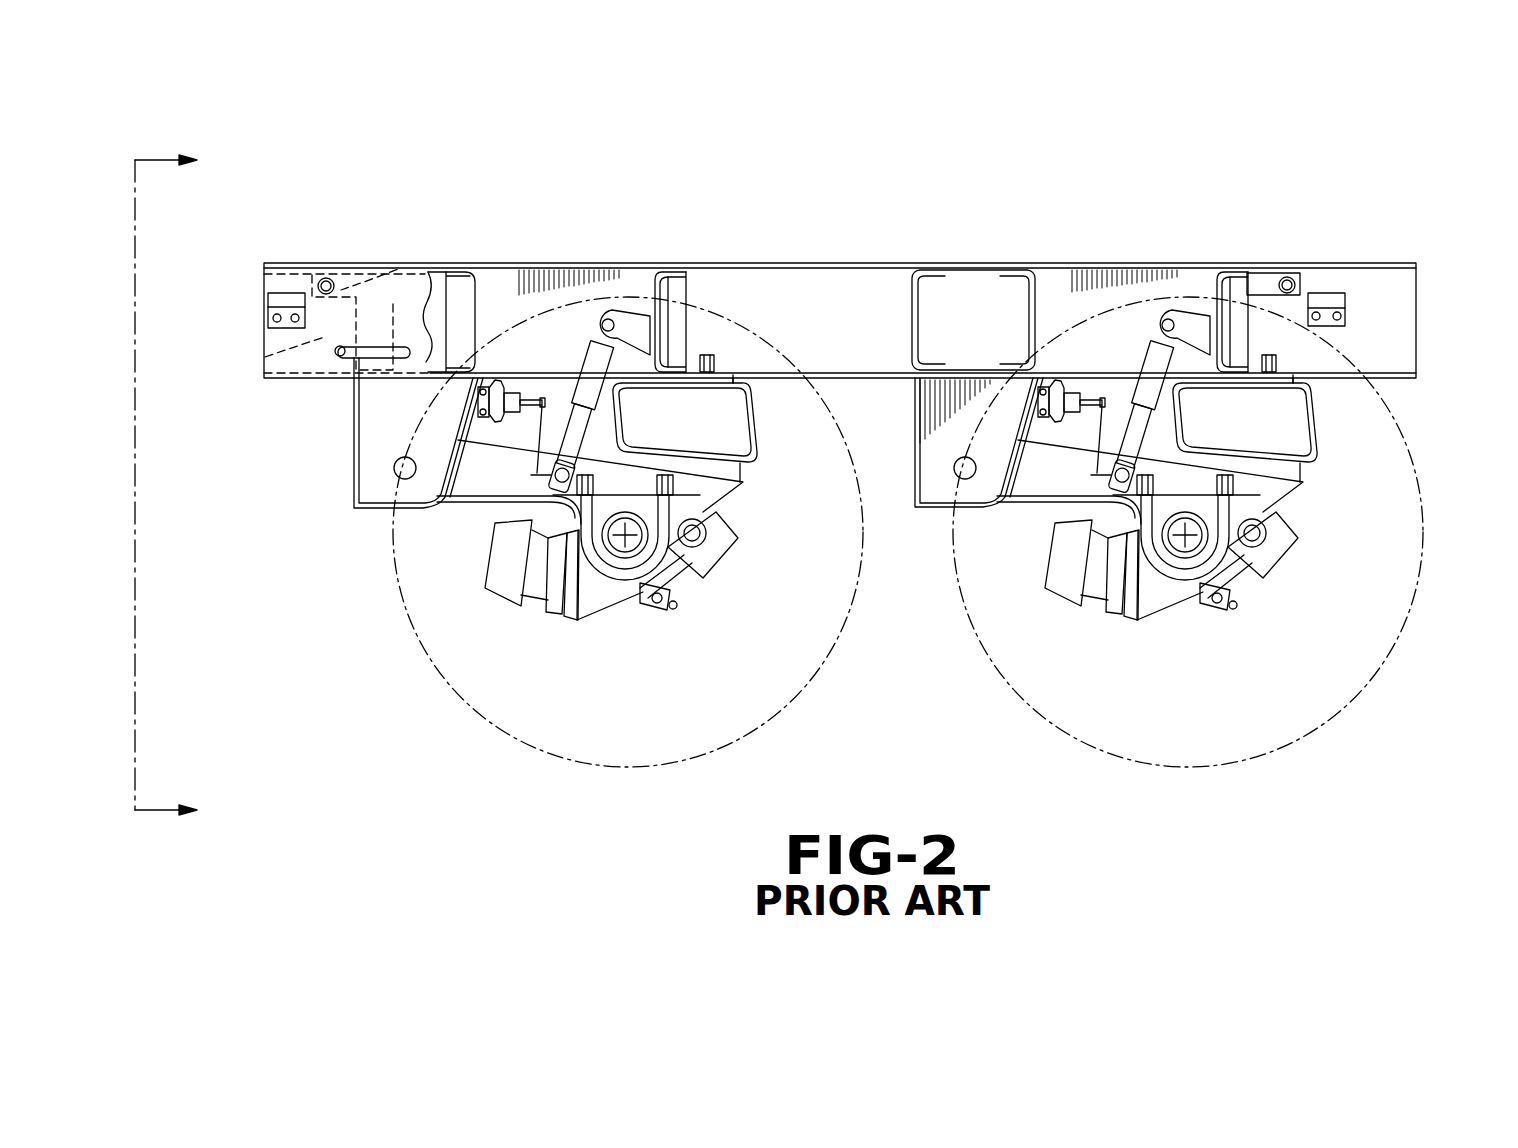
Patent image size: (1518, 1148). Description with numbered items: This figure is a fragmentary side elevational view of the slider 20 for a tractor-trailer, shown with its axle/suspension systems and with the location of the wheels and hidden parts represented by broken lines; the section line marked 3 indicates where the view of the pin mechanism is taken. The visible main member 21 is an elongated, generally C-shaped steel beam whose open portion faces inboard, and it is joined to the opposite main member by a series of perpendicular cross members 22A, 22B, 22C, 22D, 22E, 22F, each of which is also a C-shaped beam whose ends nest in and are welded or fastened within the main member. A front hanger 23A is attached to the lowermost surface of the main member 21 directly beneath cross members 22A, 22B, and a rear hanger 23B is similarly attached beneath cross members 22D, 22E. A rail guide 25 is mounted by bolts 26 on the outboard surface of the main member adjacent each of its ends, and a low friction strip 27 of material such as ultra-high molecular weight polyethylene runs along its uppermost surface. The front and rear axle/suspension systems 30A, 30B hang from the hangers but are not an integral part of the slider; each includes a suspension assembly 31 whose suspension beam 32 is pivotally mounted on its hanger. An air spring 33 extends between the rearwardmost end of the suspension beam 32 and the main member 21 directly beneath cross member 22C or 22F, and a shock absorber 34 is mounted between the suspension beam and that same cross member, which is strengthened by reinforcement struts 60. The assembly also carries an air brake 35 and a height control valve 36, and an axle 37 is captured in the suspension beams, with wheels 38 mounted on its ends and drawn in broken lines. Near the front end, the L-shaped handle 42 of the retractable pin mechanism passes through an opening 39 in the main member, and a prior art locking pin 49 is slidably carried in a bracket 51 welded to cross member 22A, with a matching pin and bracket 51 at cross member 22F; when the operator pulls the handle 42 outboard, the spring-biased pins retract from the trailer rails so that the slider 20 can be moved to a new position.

The section line for FIG. 3 is at (175, 485).
The slider 20 is at (786, 205).
The main member 21 is at (303, 381).
The cross member 22A is at (345, 321).
The cross member 22B is at (485, 302).
The cross member 22C is at (648, 272).
The cross member 22D is at (908, 314).
The cross member 22E is at (1037, 314).
The cross member 22F is at (1214, 274).
The front hanger 23A is at (348, 487).
The rear hanger 23B is at (911, 504).
The rail guide 25 is at (287, 300).
The bolt 26 is at (277, 318).
The low friction strip 27 is at (283, 260).
The front axle/suspension system 30A is at (552, 615).
The rear axle/suspension system 30B is at (1112, 615).
The suspension assembly 31 is at (603, 592).
The suspension beam 32 is at (466, 492).
The air spring 33 is at (697, 412).
The shock absorber 34 is at (593, 378).
The air brake 35 is at (500, 575).
The height control valve 36 is at (497, 420).
The axle 37 is at (627, 535).
The wheel 38 is at (393, 578).
The opening 39 is at (340, 357).
The handle 42 is at (400, 357).
The locking pin 49 is at (326, 277).
The bracket 51 is at (396, 270).
The reinforcement strut 60 is at (670, 294).